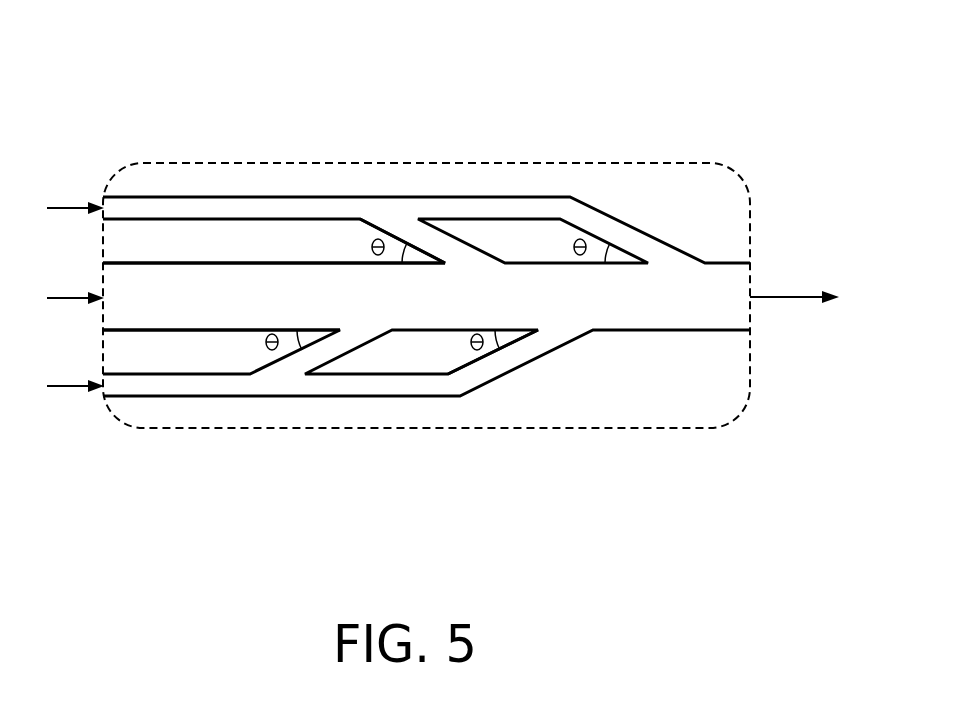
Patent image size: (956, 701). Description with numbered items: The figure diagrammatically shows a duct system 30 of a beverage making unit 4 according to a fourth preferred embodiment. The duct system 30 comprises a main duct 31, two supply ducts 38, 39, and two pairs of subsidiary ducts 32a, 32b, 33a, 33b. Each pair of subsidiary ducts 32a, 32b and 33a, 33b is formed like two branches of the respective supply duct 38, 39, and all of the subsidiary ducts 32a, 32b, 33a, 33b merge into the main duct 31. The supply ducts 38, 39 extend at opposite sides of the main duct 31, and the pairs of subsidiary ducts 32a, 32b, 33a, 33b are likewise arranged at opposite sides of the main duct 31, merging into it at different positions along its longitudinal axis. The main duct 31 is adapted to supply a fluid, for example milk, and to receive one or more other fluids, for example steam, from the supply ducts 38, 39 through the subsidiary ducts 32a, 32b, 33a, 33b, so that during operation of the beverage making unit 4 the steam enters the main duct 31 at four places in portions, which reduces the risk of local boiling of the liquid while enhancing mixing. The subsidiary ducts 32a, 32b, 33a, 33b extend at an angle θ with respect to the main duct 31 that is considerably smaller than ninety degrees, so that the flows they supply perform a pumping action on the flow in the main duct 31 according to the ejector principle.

The duct system 30 is at (306, 128).
The beverage making unit 4 is at (364, 122).
The main duct 31 is at (125, 282).
The supply duct 38 is at (246, 210).
The supply duct 39 is at (197, 384).
The subsidiary duct 32a is at (437, 245).
The subsidiary duct 32b is at (620, 237).
The subsidiary duct 33a is at (327, 345).
The subsidiary duct 33b is at (517, 350).